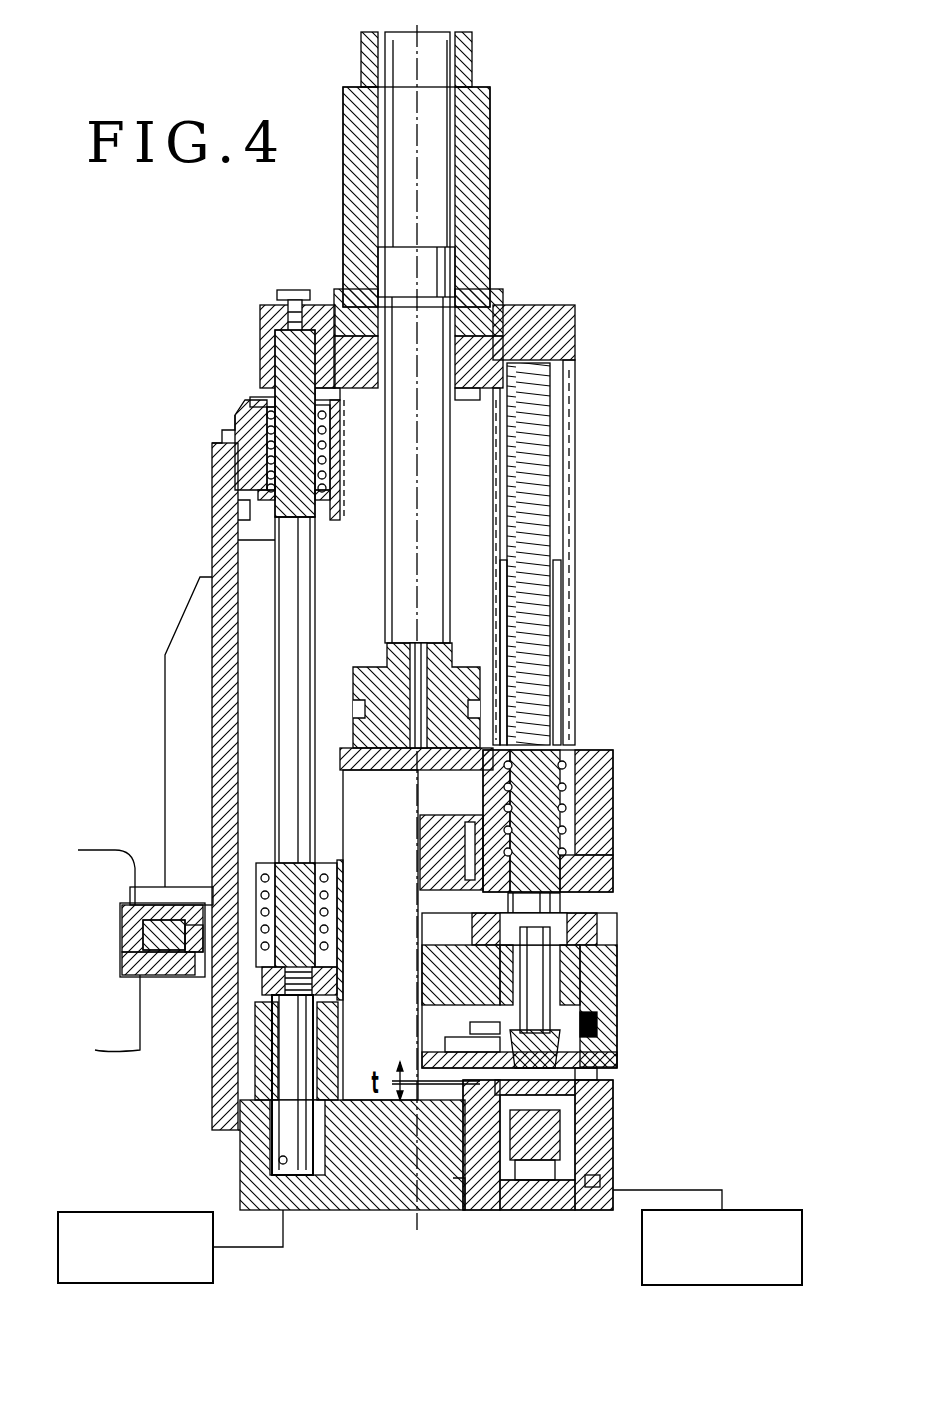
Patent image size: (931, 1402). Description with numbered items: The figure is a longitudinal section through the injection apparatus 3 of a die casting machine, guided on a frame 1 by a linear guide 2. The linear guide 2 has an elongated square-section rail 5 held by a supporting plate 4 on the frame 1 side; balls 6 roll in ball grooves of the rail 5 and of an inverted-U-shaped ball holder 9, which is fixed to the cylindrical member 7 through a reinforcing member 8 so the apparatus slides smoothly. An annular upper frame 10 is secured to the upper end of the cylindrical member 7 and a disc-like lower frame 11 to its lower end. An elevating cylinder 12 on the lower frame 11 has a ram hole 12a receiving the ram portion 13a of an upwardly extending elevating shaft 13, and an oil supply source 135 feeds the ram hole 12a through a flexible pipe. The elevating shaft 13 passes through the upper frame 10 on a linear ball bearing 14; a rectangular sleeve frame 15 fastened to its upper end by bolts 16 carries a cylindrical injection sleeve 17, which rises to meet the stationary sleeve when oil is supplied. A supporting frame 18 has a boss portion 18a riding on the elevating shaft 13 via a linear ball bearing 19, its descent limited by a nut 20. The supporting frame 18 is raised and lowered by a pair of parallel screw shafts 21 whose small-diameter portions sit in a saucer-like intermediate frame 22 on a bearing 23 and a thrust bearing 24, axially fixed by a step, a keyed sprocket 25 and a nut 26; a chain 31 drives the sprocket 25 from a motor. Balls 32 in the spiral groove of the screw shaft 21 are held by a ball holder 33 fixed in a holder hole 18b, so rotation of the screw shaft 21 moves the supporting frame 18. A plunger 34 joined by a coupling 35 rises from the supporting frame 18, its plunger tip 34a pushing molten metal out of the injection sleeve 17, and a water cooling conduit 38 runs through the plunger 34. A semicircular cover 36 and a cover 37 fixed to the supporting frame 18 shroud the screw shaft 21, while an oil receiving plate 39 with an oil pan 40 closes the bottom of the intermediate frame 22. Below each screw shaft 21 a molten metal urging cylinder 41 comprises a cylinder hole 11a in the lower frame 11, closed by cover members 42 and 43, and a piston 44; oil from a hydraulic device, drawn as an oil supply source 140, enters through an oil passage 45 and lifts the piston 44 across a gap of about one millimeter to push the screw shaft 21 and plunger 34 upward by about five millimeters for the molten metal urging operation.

The frame 1 is at (125, 860).
The linear guide 2 is at (165, 988).
The injection apparatus 3 is at (552, 266).
The supporting plate 4 is at (183, 960).
The rail 5 is at (150, 958).
The balls 6 is at (148, 937).
The cylindrical member 7 is at (212, 506).
The reinforcing member 8 is at (176, 633).
The ball holder 9 is at (130, 915).
The upper frame 10 is at (245, 405).
The lower frame 11 is at (370, 1215).
The cylinder hole 11a is at (597, 1121).
The elevating cylinder 12 is at (354, 1046).
The ram hole 12a is at (278, 1163).
The elevating shaft 13 is at (262, 678).
The ram portion 13a is at (290, 1120).
The linear ball bearing 14 is at (266, 458).
The sleeve frame 15 is at (560, 304).
The bolts 16 is at (293, 288).
The injection sleeve 17 is at (470, 66).
The supporting frame 18 is at (628, 742).
The boss portion 18a is at (341, 953).
The holder hole 18b is at (586, 776).
The linear ball bearing 19 is at (266, 862).
The nut 20 is at (338, 991).
The screw shaft 21 is at (570, 628).
The intermediate frame 22 is at (626, 969).
The bearing 23 is at (592, 996).
The thrust bearing 24 is at (605, 950).
The sprocket 25 is at (592, 1036).
The nut 26 is at (575, 1072).
The chain 31 is at (600, 1015).
The balls 32 is at (592, 787).
The ball holder 33 is at (607, 868).
The plunger 34 is at (480, 535).
The plunger tip 34a is at (442, 262).
The coupling 35 is at (480, 665).
The cover 36 is at (575, 448).
The cover 37 is at (574, 705).
The water cooling conduit 38 is at (390, 662).
The oil receiving plate 39 is at (614, 1057).
The oil pan 40 is at (497, 1041).
The molten metal urging cylinder 41 is at (622, 1163).
The cover member 42 is at (598, 1086).
The cover member 43 is at (508, 1205).
The piston 44 is at (568, 1205).
The oil passage 45 is at (600, 1205).
The oil supply source 135 is at (80, 1212).
The oil supply source 140 is at (748, 1210).